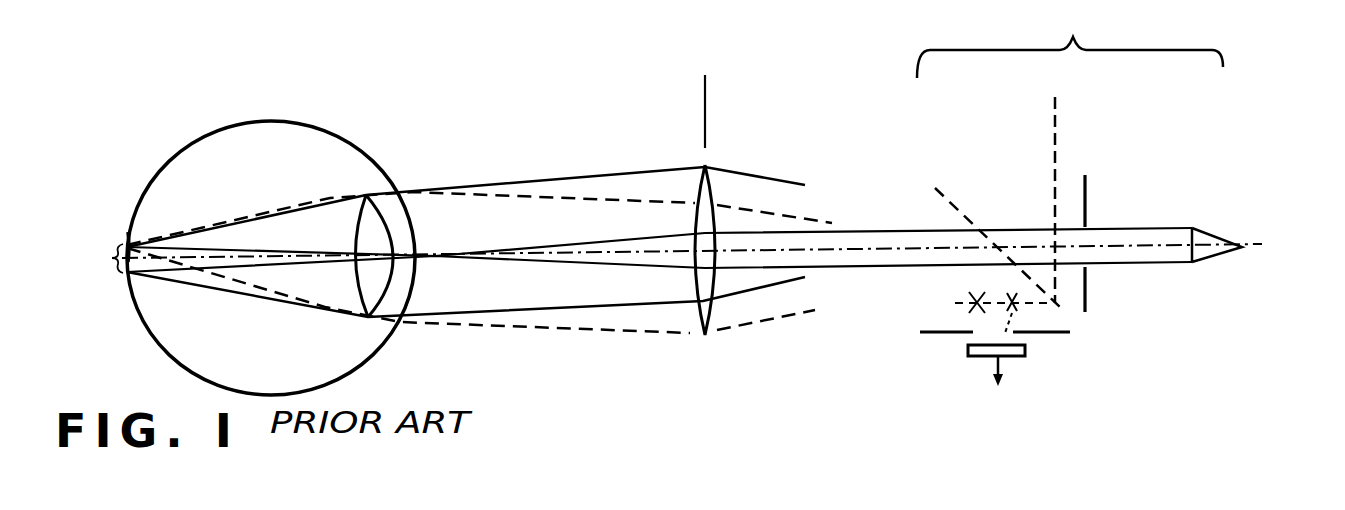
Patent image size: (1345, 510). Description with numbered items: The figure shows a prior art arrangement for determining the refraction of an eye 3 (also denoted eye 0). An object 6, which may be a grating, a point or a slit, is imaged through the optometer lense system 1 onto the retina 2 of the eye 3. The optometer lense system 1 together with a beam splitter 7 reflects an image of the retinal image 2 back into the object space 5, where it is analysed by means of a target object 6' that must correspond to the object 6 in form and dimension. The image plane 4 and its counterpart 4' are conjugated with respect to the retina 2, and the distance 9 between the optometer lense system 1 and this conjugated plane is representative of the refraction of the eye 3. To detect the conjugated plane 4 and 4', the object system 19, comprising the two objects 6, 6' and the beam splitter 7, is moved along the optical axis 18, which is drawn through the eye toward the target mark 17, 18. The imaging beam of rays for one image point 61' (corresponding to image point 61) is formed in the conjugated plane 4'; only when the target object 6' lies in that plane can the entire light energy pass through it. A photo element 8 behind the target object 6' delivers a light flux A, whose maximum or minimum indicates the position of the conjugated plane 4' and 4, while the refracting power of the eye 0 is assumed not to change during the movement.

The eye 0 is at (353, 141).
The optometer lense system 1 is at (703, 167).
The retina 2 is at (116, 260).
The eye 3 is at (131, 211).
The image plane 4 is at (1025, 200).
The conjugated image plane 4' is at (968, 311).
The object space 5 is at (905, 91).
The object 6 is at (1107, 220).
The target object 6' is at (1008, 354).
The beam splitter 7 is at (968, 222).
The photo element 8 is at (977, 358).
The distance 9 is at (1045, 126).
The light source 17 is at (1266, 221).
The optical axis 18 is at (1255, 243).
The object system 19 is at (1070, 39).
The image point 61 is at (1117, 298).
The image point 61' is at (917, 361).
The light flux A is at (1005, 366).